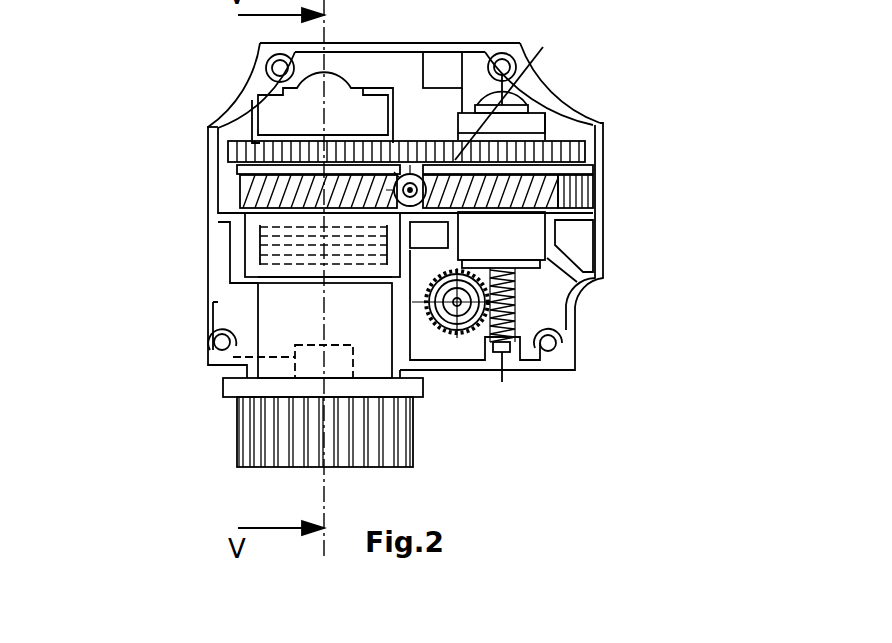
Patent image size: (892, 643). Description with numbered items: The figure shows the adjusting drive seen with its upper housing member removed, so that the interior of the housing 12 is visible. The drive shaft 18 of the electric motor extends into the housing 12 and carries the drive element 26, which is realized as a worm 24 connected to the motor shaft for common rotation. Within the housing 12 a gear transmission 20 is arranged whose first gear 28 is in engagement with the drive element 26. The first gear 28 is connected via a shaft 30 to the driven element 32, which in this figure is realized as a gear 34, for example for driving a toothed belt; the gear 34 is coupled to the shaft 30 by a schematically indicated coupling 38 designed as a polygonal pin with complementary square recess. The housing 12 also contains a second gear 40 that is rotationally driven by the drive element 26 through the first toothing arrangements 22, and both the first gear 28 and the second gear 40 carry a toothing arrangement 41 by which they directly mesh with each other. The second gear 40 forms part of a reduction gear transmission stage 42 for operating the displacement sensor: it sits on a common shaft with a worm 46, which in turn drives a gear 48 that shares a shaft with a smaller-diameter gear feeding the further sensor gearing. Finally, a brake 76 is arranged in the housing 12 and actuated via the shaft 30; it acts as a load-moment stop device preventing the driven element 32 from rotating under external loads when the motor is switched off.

The housing 12 is at (636, 280).
The drive shaft 18 is at (513, 91).
The gear transmission 20 is at (192, 163).
The first toothing arrangements 22 is at (273, 190).
The worm 24 is at (528, 162).
The drive element 26 is at (440, 174).
The first gear 28 is at (273, 168).
The shaft 30 is at (272, 296).
The driven element 32 is at (207, 407).
The gear 34 is at (272, 426).
The connector (hidden) 38 is at (233, 357).
The second gear 40 is at (563, 167).
The toothing arrangement 41 is at (255, 152).
The gear transmission stage 42 is at (524, 281).
The worm 46 is at (552, 352).
The gear 48 is at (466, 332).
The brake 76 is at (258, 235).